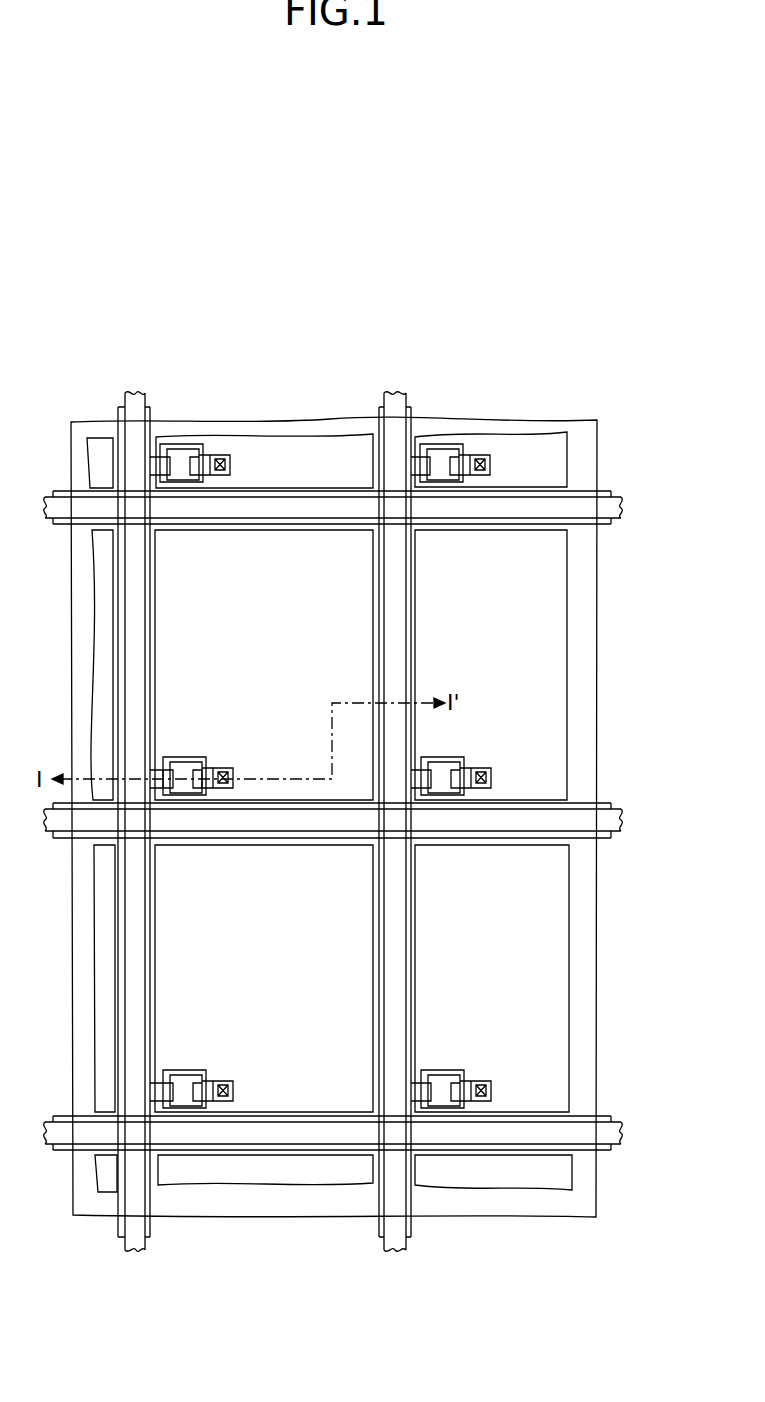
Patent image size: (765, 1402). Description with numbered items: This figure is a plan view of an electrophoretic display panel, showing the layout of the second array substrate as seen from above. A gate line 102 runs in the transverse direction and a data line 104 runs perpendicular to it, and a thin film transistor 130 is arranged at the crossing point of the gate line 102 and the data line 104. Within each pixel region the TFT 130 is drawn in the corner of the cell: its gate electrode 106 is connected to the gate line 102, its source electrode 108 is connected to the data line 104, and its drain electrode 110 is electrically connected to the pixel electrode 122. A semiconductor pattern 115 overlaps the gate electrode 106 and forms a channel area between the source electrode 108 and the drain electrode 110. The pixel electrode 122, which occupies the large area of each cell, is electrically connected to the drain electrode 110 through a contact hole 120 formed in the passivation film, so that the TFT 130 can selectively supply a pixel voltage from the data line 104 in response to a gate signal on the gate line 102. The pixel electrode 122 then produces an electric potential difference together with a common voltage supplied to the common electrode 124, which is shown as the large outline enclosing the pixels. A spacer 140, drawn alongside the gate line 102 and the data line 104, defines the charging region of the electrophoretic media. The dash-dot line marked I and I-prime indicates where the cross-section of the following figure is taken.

The gate line 102 is at (612, 802).
The data line 104 is at (380, 1238).
The gate electrode 106 is at (201, 768).
The source electrode 108 is at (163, 758).
The drain electrode 110 is at (234, 772).
The semiconductor pattern 115 is at (184, 761).
The contact hole 120 is at (226, 766).
The pixel electrode 122 is at (315, 601).
The common electrode 124 is at (597, 446).
The thin film transistor 130 is at (230, 702).
The spacer 140 is at (622, 815).